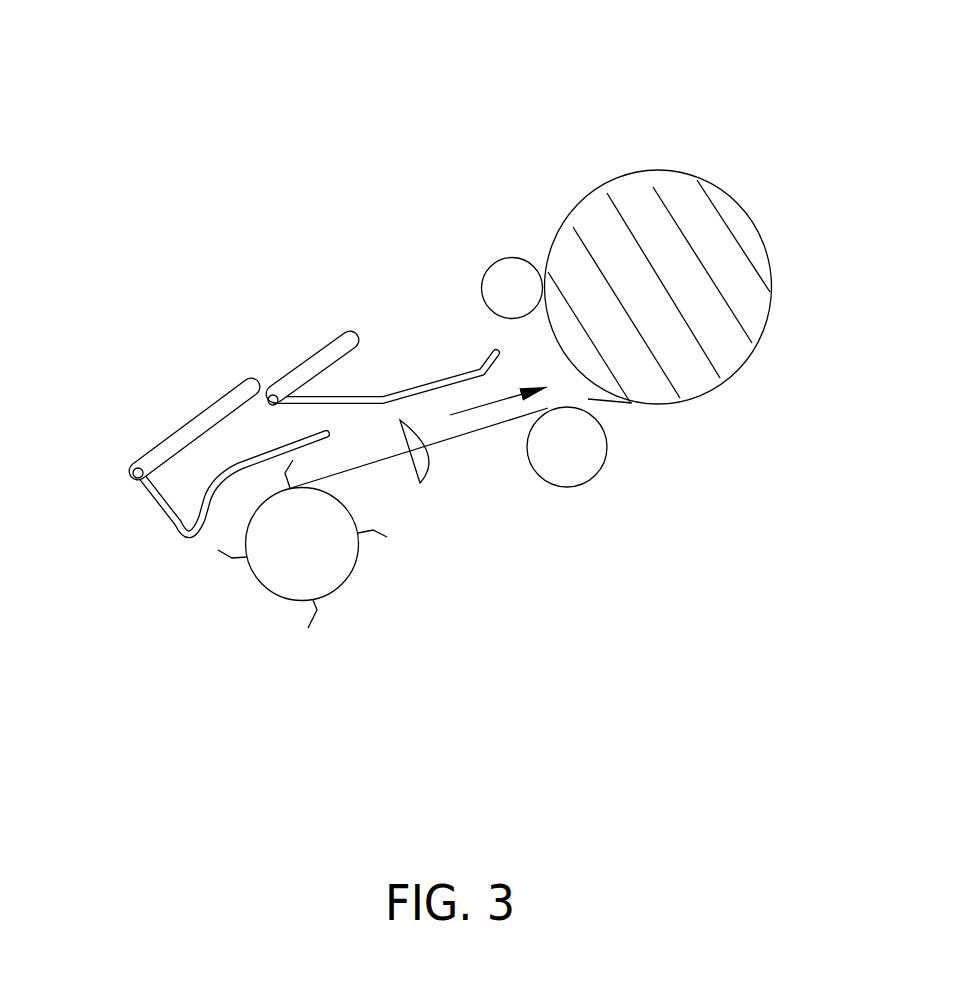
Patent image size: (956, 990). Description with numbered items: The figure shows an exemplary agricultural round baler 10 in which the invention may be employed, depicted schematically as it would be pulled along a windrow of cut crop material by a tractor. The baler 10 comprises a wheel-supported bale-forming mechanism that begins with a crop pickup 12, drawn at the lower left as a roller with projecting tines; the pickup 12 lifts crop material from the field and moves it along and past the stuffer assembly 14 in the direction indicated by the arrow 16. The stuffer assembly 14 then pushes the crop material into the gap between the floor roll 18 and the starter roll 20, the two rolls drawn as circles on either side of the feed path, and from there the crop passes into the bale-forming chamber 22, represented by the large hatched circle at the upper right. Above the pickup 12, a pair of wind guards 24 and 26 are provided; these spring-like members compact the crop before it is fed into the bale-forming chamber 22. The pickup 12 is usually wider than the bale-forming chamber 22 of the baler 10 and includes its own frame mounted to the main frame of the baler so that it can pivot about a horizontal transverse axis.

The round baler 10 is at (343, 210).
The crop pickup 12 is at (373, 558).
The stuffer assembly 14 is at (437, 477).
The arrow 16 is at (485, 407).
The floor roll 18 is at (598, 470).
The starter roll 20 is at (513, 258).
The bale-forming chamber 22 is at (652, 147).
The wind guard 24 is at (163, 407).
The wind guard 26 is at (307, 335).